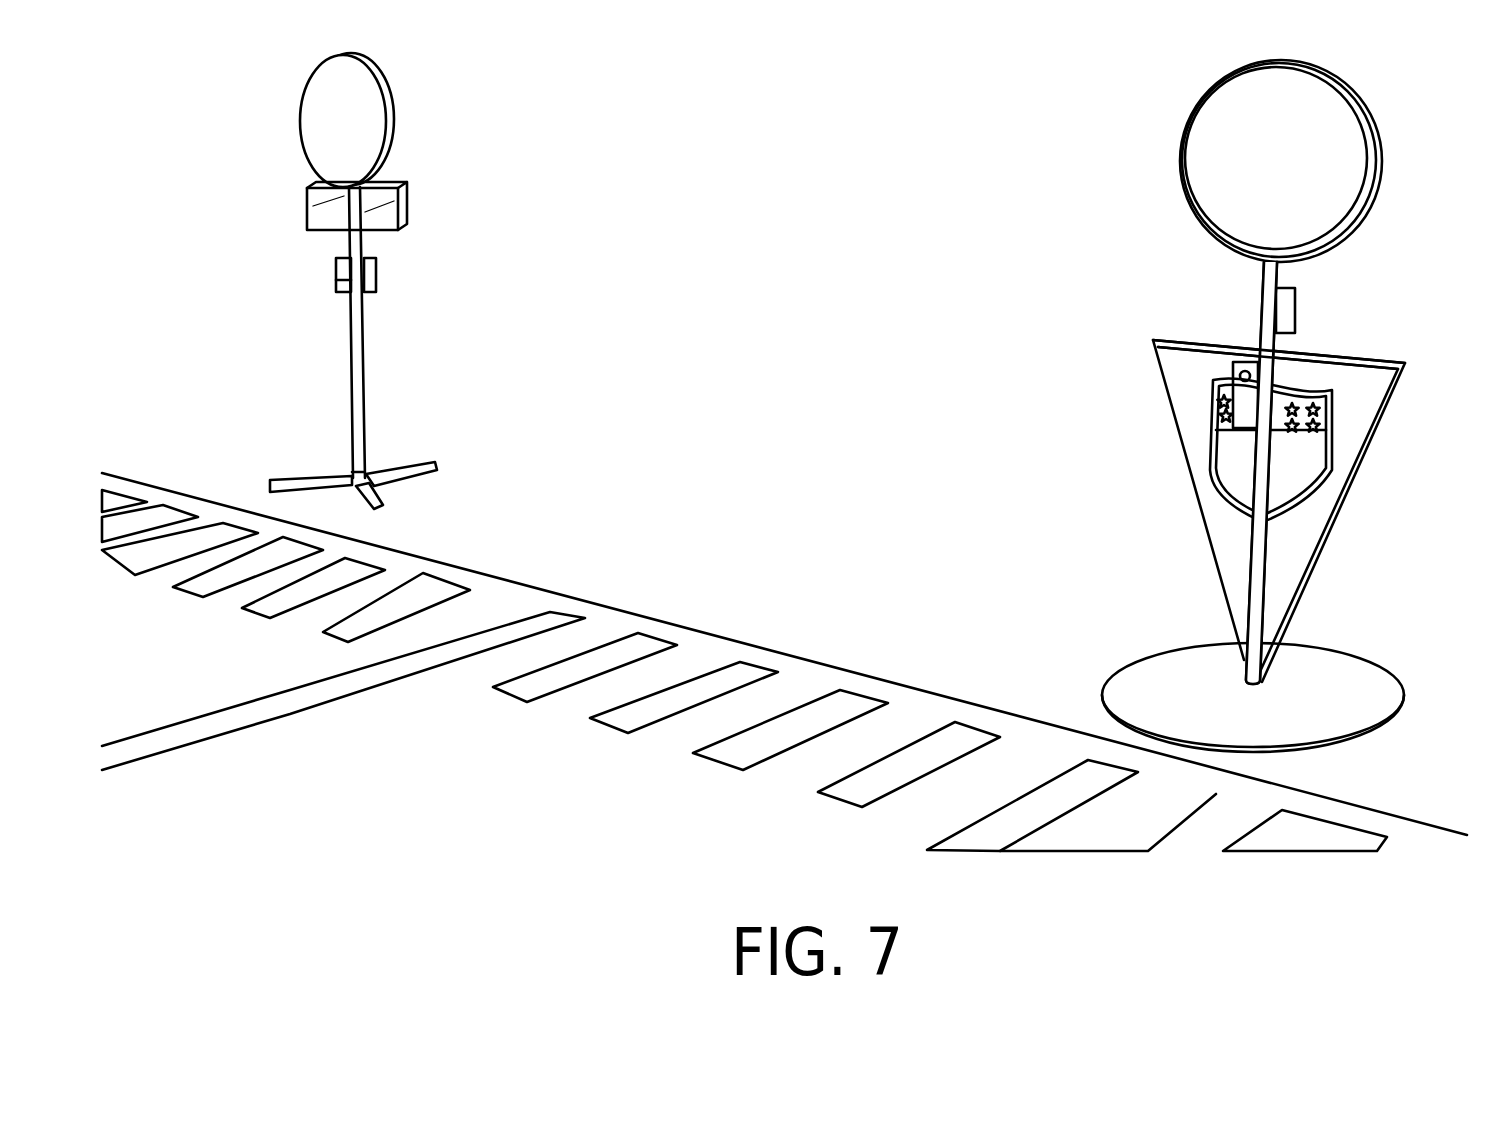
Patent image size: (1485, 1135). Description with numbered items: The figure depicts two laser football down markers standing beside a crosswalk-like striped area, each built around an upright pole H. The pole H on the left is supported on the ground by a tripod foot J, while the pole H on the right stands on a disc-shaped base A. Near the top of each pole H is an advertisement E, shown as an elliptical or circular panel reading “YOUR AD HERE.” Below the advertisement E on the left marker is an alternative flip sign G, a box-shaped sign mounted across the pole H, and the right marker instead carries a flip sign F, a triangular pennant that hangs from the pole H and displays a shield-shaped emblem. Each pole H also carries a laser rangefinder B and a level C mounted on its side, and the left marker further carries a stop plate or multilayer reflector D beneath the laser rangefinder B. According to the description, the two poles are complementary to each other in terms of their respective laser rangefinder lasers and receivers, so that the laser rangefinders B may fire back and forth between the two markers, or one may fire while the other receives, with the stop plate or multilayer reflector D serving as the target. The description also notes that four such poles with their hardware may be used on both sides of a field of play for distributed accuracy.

The base A is at (1220, 410).
The laser rangefinder B is at (336, 272).
The level C is at (377, 276).
The stop plate or multilayer reflector D is at (336, 288).
The advertisement E is at (380, 100).
The flip sign F is at (1192, 452).
The alternative flip sign G is at (405, 206).
The pole H is at (364, 390).
The tripod foot J is at (396, 478).